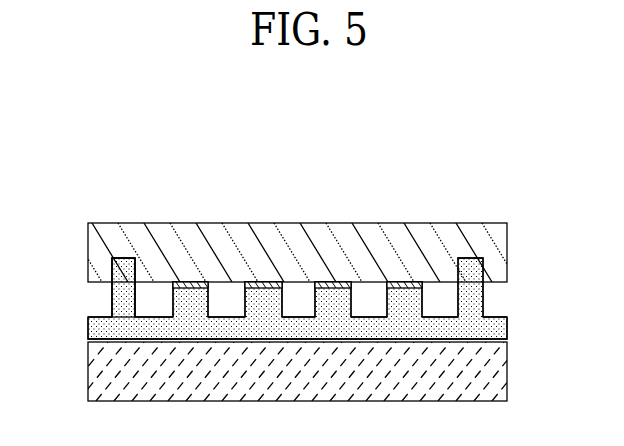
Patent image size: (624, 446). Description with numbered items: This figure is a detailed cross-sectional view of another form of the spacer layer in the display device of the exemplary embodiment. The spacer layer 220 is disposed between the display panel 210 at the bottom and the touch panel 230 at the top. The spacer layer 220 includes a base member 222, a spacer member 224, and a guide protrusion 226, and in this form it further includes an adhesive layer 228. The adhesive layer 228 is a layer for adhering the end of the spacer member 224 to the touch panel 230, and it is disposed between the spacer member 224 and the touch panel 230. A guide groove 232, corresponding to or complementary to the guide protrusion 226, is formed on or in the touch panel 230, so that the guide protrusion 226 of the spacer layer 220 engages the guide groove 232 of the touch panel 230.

The display panel 210 is at (507, 374).
The spacer layer 220 is at (305, 252).
The base member 222 is at (89, 328).
The spacer member 224 is at (195, 288).
The guide protrusion 226 is at (122, 277).
The adhesive layer 228 is at (277, 288).
The touch panel 230 is at (507, 248).
The guide groove 232 is at (131, 272).